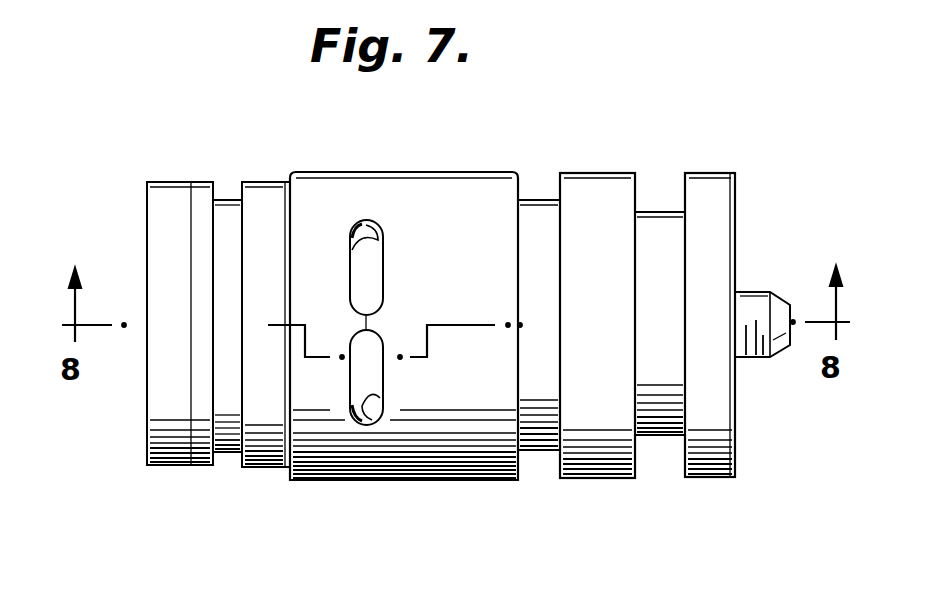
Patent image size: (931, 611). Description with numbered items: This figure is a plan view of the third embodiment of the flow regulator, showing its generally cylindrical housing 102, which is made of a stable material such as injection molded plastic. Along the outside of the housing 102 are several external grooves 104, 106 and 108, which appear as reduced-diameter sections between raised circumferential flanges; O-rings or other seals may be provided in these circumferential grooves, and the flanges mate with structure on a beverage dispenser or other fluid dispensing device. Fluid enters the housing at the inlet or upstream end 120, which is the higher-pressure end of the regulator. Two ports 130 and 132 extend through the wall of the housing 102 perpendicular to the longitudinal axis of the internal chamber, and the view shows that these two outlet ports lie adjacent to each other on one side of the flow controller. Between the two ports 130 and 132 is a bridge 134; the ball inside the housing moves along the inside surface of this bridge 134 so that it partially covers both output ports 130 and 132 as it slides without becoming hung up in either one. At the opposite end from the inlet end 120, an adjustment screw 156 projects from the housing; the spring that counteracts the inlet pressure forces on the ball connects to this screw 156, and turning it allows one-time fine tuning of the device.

The inlet or upstream end 120 is at (132, 248).
The housing 102 is at (422, 185).
The external groove 104 is at (542, 200).
The external groove 106 is at (660, 435).
The external groove 108 is at (232, 452).
The port 130 is at (370, 424).
The port 132 is at (355, 232).
The bridge 134 is at (360, 322).
The adjustment screw 156 is at (755, 358).